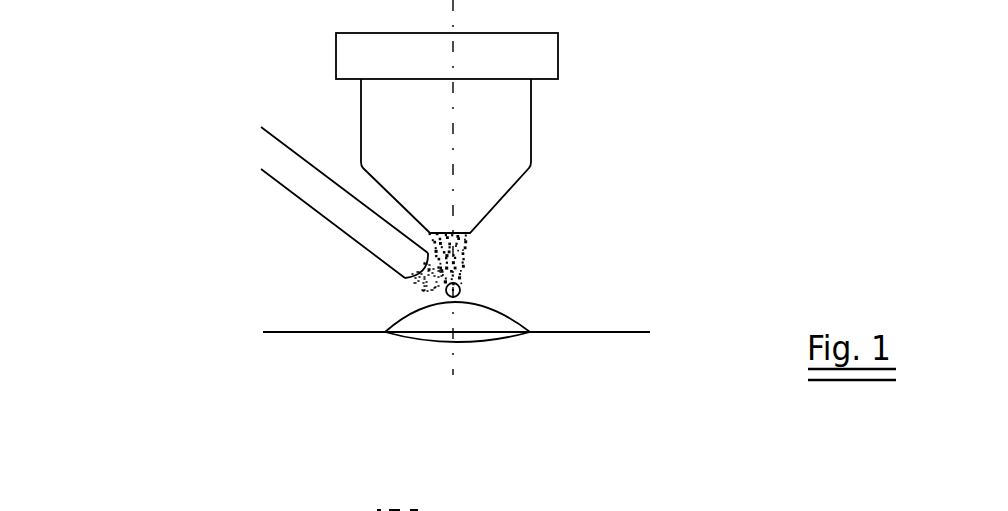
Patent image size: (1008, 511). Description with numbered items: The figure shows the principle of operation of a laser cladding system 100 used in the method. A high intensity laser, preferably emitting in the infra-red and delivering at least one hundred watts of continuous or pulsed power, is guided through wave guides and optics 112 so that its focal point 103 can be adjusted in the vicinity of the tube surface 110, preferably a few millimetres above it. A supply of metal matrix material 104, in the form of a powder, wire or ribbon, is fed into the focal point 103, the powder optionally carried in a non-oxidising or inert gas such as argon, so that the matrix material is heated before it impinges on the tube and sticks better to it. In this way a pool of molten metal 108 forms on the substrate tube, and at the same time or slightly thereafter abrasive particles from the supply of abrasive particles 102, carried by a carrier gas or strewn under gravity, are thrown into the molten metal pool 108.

The laser cladding system 100 is at (229, 65).
The optics 112 is at (508, 143).
The supply of abrasive particles 102 is at (463, 253).
The focal point 103 is at (460, 290).
The supply of metal matrix material 104 is at (318, 193).
The pool of molten metal 108 is at (487, 330).
The tube surface 110 is at (342, 383).